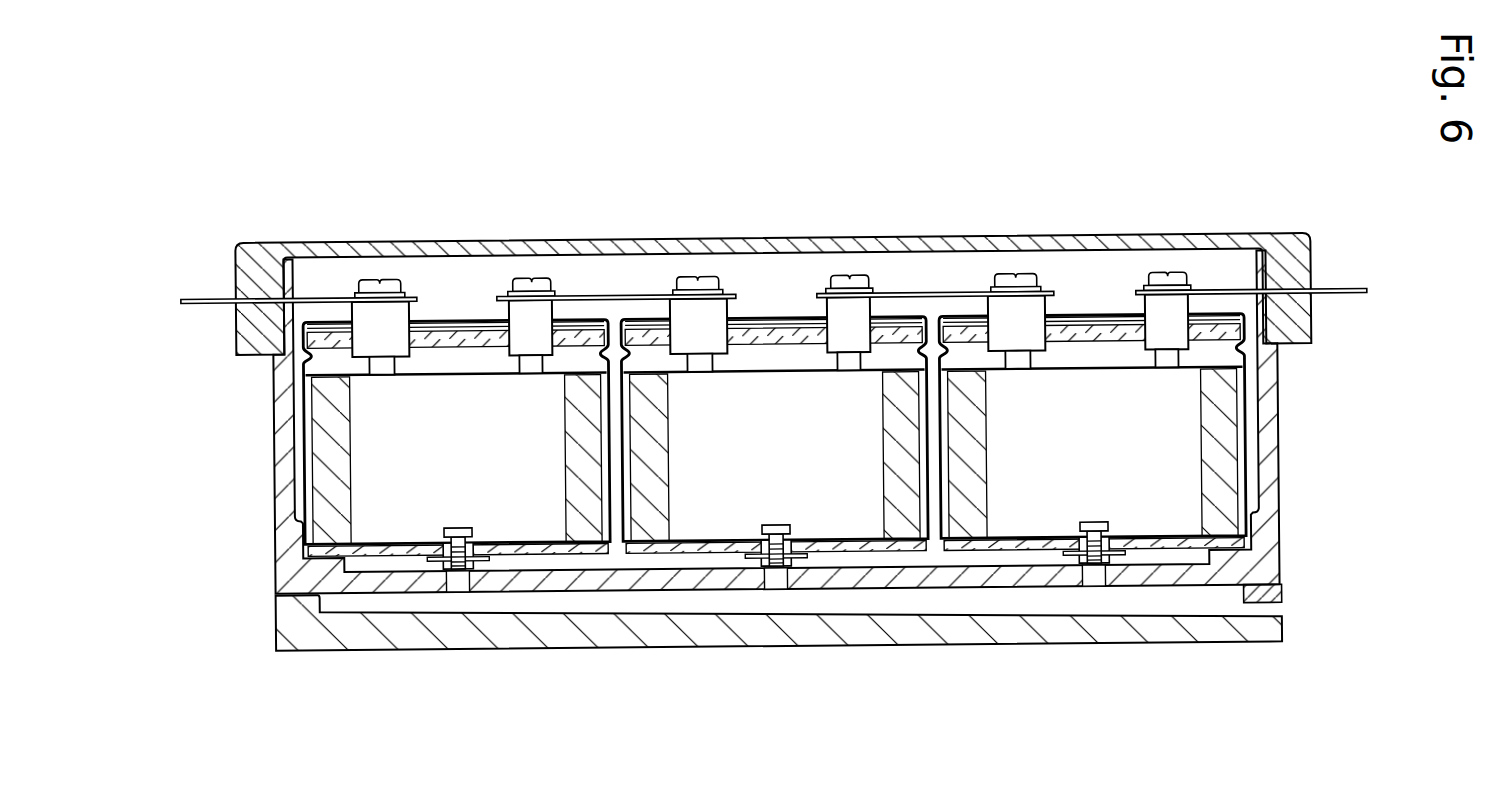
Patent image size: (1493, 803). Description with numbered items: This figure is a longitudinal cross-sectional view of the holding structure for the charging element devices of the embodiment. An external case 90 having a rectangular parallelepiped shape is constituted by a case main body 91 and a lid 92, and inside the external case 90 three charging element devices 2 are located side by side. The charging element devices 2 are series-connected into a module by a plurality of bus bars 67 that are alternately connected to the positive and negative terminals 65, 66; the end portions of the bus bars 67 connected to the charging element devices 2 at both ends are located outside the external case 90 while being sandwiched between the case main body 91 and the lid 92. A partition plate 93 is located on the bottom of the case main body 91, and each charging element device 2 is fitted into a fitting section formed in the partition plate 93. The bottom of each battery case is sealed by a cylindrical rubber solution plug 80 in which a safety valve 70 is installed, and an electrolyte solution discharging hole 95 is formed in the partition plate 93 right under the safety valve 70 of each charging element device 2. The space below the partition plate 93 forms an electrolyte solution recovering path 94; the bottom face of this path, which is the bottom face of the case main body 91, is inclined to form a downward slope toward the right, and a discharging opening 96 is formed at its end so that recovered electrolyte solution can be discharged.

The charging element device 2 is at (296, 465).
The positive terminal 65 is at (412, 298).
The negative terminal 66 is at (498, 297).
The bus bar 67 is at (207, 294).
The safety valve 70 is at (459, 526).
The solution plug 80 is at (446, 541).
The external case 90 is at (772, 422).
The case main body 91 is at (1280, 517).
The lid 92 is at (795, 238).
The partition plate 93 is at (613, 520).
The electrolyte solution recovering path 94 is at (830, 598).
The electrolyte solution discharging hole 95 is at (454, 587).
The discharging opening 96 is at (1275, 609).